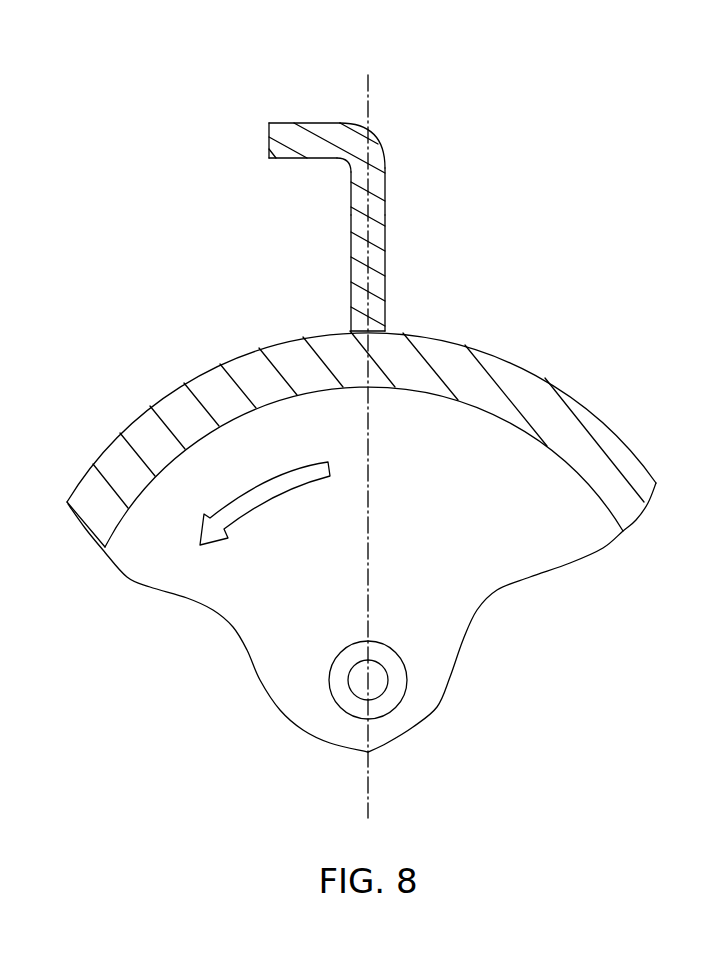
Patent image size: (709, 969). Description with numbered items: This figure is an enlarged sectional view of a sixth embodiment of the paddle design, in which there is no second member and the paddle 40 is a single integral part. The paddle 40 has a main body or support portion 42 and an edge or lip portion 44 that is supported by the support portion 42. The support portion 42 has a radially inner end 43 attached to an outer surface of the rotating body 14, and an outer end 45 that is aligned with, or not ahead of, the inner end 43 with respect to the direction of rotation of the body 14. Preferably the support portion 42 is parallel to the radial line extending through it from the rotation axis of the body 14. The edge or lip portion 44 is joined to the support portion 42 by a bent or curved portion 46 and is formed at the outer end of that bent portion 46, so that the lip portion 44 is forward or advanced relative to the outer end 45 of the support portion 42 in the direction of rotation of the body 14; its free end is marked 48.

The body 14 is at (198, 371).
The paddle 40 is at (361, 250).
The support portion 42 is at (378, 273).
The radially inner end 43 is at (372, 332).
The edge or lip portion 44 is at (310, 123).
The outer end 45 is at (359, 175).
The bent or curved portion 46 is at (373, 152).
The free end of arm 48 is at (269, 145).